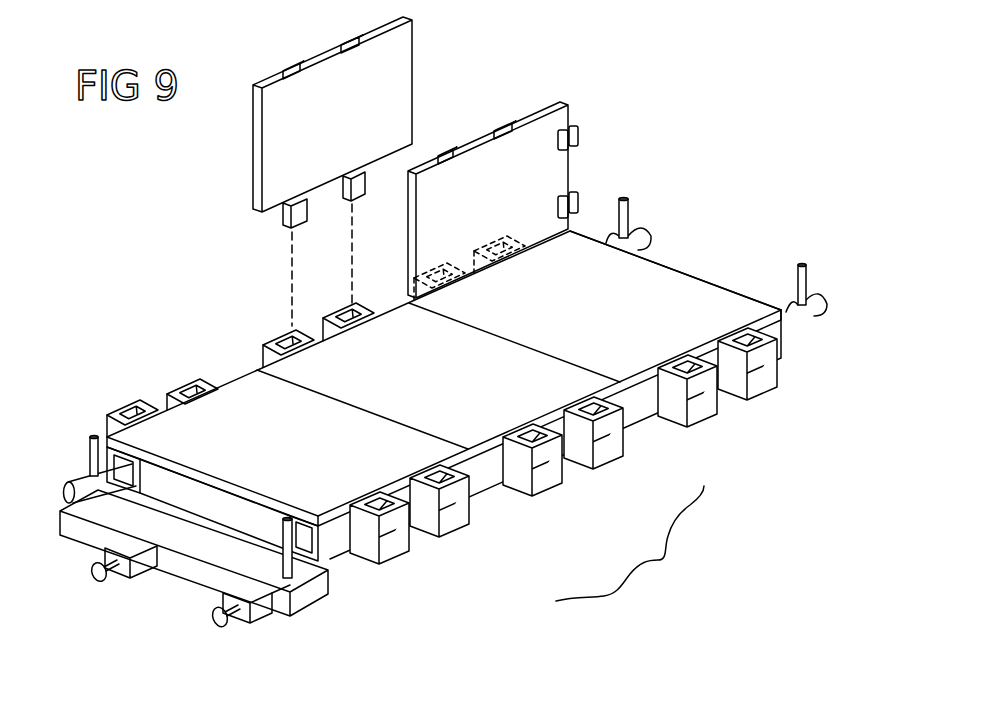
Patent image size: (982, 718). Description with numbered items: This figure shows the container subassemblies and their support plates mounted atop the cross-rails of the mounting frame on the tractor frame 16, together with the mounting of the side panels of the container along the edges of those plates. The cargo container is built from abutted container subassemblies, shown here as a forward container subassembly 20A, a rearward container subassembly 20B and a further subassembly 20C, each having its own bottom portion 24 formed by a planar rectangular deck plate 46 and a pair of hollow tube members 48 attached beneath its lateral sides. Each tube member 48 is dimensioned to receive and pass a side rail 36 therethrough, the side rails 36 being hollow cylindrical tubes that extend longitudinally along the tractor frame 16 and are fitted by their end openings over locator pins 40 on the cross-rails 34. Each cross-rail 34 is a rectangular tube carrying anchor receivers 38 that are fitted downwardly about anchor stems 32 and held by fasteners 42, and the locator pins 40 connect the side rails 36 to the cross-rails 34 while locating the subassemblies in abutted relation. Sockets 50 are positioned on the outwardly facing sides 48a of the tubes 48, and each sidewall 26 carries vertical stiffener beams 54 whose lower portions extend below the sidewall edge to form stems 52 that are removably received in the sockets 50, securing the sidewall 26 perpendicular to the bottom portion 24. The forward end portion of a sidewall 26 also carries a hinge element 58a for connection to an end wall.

The tractor frame 16 is at (658, 561).
The forward container subassembly 20A is at (617, 314).
The rearward container subassembly 20B is at (458, 387).
The deck section 20C is at (303, 452).
The bottom portion 24 is at (661, 270).
The sidewall 26 is at (256, 172).
The anchor stem 32 is at (121, 586).
The cross-rail 34 is at (240, 577).
The side rail 36 is at (58, 507).
The anchor receiver 38 is at (265, 608).
The locator pin 40 is at (88, 437).
The fastener 42 is at (90, 572).
The deck plate 46 is at (708, 300).
The tube member 48 is at (791, 345).
The outwardly facing side 48a is at (335, 550).
The socket 50 is at (352, 300).
The stem 52 is at (285, 221).
The vertical stiffener beam 54 is at (296, 63).
The hinge element 58a is at (578, 140).